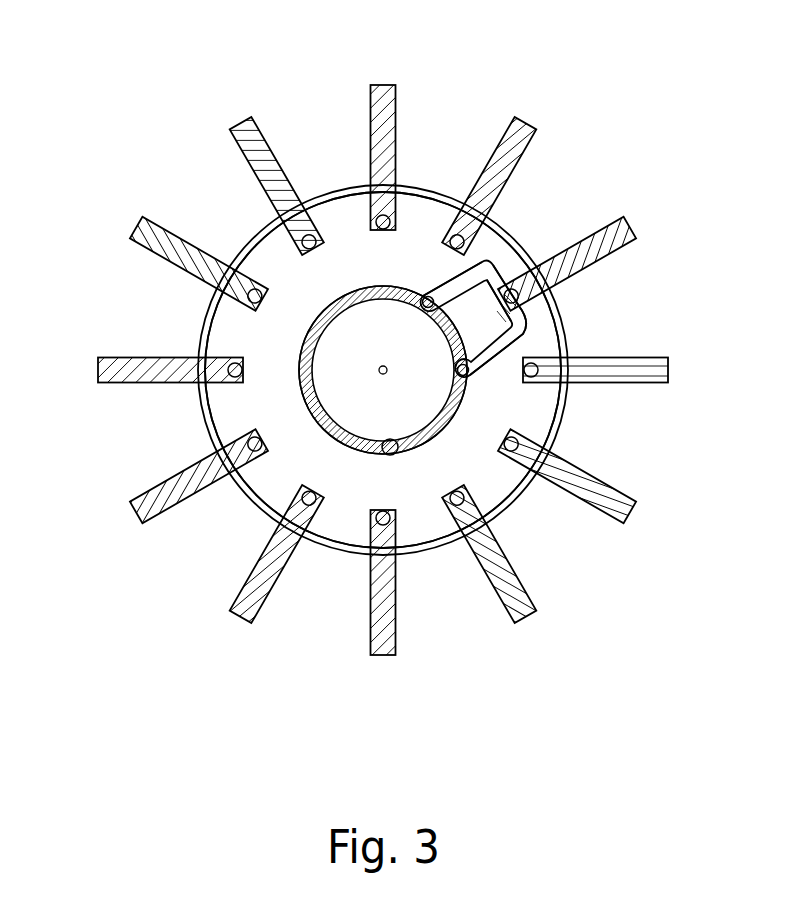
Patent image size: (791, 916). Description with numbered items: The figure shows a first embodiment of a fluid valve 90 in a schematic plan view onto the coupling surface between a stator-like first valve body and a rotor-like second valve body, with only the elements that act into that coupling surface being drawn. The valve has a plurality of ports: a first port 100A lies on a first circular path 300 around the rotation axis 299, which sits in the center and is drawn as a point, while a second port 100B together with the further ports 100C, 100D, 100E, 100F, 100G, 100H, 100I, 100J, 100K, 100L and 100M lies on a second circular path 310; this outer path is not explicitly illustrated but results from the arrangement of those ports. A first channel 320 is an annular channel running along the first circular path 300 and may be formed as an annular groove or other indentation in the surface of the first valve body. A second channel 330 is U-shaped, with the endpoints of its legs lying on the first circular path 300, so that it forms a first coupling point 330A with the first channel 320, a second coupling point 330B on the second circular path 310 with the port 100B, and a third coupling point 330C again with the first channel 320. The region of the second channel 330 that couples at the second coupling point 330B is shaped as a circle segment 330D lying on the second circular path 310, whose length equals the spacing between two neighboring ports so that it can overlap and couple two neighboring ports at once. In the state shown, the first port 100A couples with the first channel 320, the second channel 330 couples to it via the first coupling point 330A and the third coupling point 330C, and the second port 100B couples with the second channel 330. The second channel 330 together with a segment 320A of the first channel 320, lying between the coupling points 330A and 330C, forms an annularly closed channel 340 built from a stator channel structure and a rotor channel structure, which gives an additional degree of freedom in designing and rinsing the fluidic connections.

The fluid valve 90 is at (622, 149).
The first port 100A is at (386, 374).
The second port 100B is at (515, 300).
The port 100C is at (450, 237).
The port 100D is at (375, 225).
The port 100E is at (303, 247).
The port 100F is at (252, 303).
The port 100G is at (238, 378).
The port 100H is at (262, 448).
The port 100I is at (318, 492).
The port 100J is at (389, 456).
The port 100K is at (465, 490).
The port 100L is at (512, 448).
The port 100M is at (528, 378).
The rotation axis 299 is at (442, 421).
The first circular path 300 is at (480, 487).
The second circular path 310 is at (248, 320).
The first channel 320 is at (327, 307).
The segment of the first channel 320A is at (500, 282).
The second channel 330 is at (530, 290).
The first coupling point 330A is at (425, 296).
The second coupling point 330B is at (529, 316).
The third coupling point 330C is at (468, 377).
The circle segment 330D is at (528, 334).
The annularly closed channel 340 is at (539, 253).